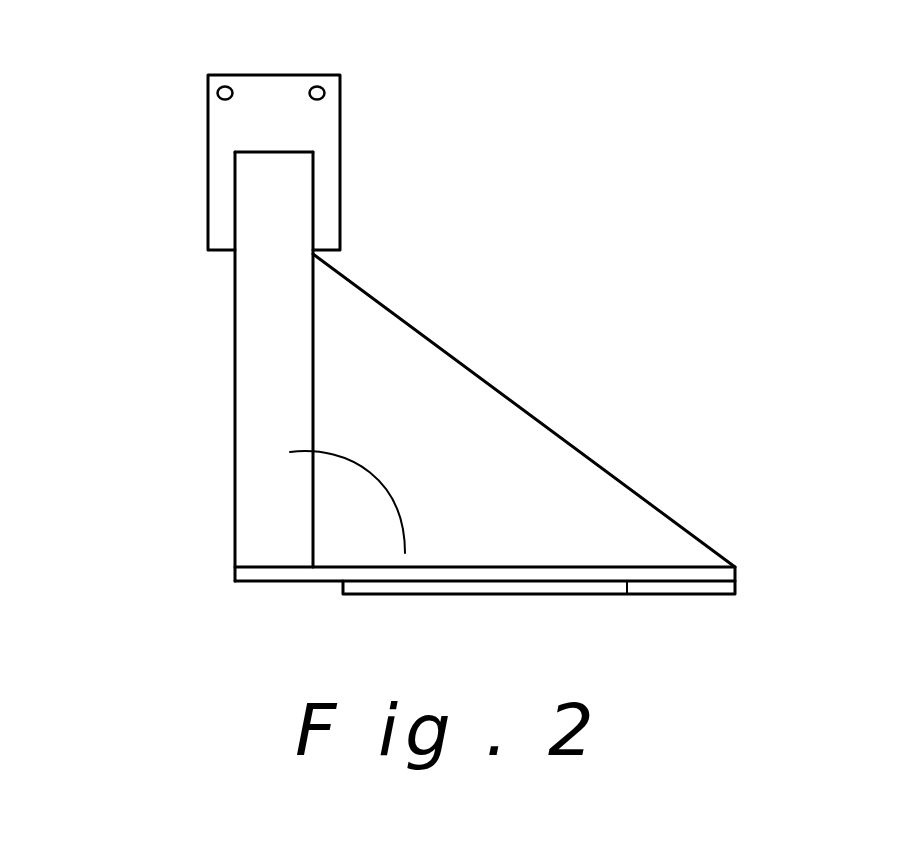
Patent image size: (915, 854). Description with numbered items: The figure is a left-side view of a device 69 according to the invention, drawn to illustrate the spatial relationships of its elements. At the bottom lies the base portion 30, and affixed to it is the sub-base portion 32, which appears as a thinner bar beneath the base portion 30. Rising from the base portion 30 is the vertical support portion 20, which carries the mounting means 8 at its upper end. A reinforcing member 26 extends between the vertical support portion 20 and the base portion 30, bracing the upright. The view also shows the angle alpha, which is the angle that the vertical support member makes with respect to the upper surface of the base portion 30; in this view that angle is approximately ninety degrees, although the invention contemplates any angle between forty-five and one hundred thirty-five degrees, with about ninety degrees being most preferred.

The mounting means 8 is at (305, 125).
The vertical support portion 20 is at (247, 431).
The reinforcing member 26 is at (530, 487).
The base portion 30 is at (339, 573).
The sub-base portion 32 is at (590, 585).
The device 69 is at (755, 148).